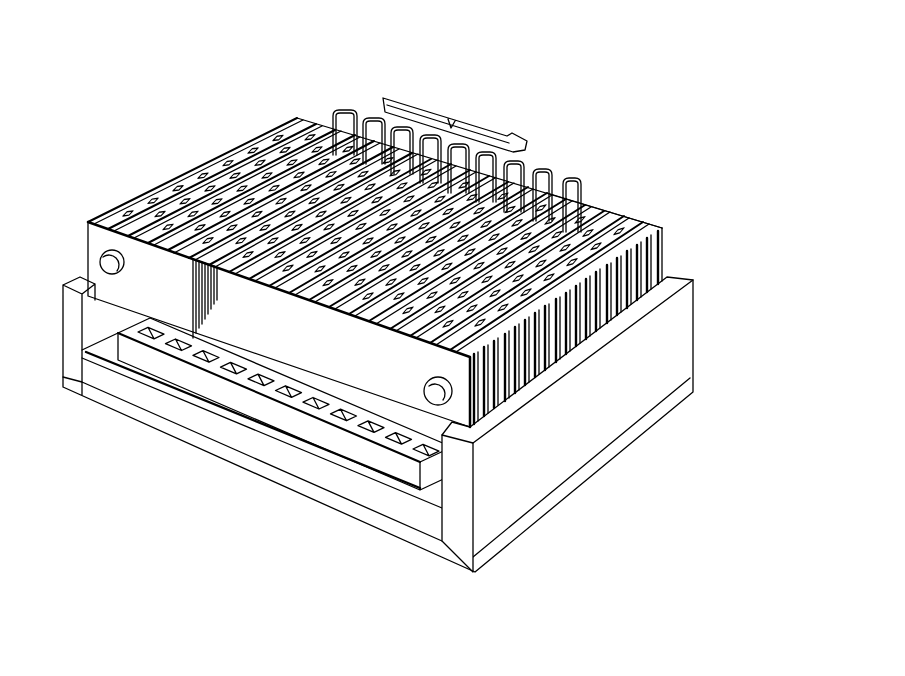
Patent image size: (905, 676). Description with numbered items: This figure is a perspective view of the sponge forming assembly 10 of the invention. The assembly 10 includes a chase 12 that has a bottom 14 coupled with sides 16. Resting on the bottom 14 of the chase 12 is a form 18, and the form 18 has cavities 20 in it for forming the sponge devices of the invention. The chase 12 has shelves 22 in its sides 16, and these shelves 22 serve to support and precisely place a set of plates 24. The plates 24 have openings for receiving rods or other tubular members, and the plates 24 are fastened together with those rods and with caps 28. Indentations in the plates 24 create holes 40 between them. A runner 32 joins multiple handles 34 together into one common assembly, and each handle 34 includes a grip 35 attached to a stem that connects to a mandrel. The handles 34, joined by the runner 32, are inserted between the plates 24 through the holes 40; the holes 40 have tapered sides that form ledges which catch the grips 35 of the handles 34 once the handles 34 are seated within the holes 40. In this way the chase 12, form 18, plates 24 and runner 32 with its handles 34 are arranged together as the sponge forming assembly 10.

The assembly 10 is at (250, 72).
The chase 12 is at (700, 345).
The bottom 14 is at (415, 540).
The sides 16 is at (630, 412).
The form 18 is at (210, 385).
The cavities 20 is at (323, 405).
The shelves 22 is at (96, 292).
The plates 24 is at (238, 155).
The caps 28 is at (86, 245).
The runner 32 is at (352, 112).
The handles 34 is at (566, 214).
The grips 35 is at (553, 200).
The holes 40 is at (212, 206).